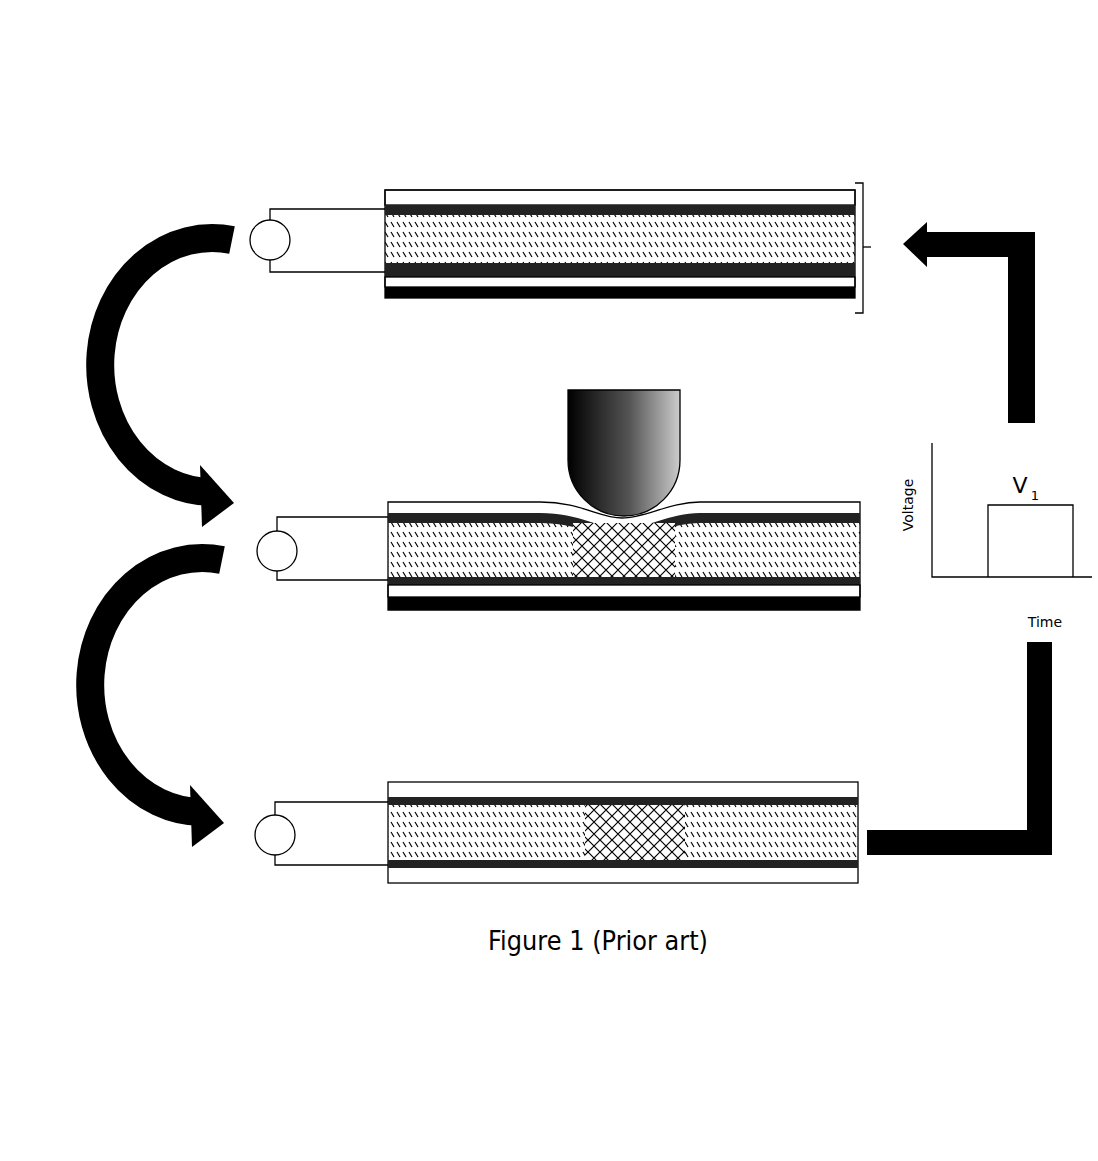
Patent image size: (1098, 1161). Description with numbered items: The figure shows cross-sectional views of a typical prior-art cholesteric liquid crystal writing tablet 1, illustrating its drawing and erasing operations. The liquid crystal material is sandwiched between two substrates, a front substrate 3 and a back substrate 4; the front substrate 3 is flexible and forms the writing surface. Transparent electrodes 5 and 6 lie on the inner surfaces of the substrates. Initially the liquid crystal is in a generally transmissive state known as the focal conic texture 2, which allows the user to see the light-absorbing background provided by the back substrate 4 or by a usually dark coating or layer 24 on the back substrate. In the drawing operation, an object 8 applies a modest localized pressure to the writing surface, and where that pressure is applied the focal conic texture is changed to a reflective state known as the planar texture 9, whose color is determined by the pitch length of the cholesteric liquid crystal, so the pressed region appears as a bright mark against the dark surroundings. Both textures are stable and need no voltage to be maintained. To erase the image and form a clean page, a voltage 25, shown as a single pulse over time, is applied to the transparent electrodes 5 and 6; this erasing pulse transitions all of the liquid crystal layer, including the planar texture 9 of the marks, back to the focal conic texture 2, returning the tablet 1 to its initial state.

The writing tablet 1 is at (639, 248).
The focal conic texture 2 is at (602, 248).
The front substrate 3 is at (437, 200).
The back substrate 4 is at (617, 282).
The transparent electrode 5 is at (405, 272).
The transparent electrode 6 is at (688, 205).
The object 8 is at (623, 443).
The planar texture 9 is at (628, 553).
The coating or layer on the back substrate 24 is at (763, 298).
The voltage 25 is at (319, 537).